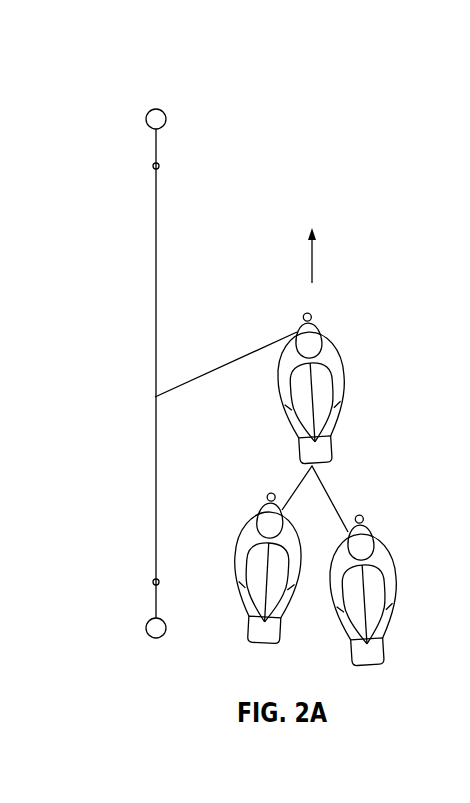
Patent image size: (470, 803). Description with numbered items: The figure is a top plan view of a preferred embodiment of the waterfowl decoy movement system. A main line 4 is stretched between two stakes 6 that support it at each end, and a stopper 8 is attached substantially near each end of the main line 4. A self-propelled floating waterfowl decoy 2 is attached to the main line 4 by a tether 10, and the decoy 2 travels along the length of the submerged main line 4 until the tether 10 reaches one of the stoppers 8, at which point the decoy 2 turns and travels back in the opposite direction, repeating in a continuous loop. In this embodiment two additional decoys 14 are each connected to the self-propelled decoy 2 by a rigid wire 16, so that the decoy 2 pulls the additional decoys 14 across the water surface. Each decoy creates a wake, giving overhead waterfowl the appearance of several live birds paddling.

The self-propelled floating waterfowl decoy 2 is at (344, 382).
The main line 4 is at (155, 292).
The stakes 6 is at (147, 116).
The stoppers 8 is at (160, 165).
The tether 10 is at (225, 362).
The additional decoy 14 is at (237, 557).
The rigid wire 16 is at (328, 493).